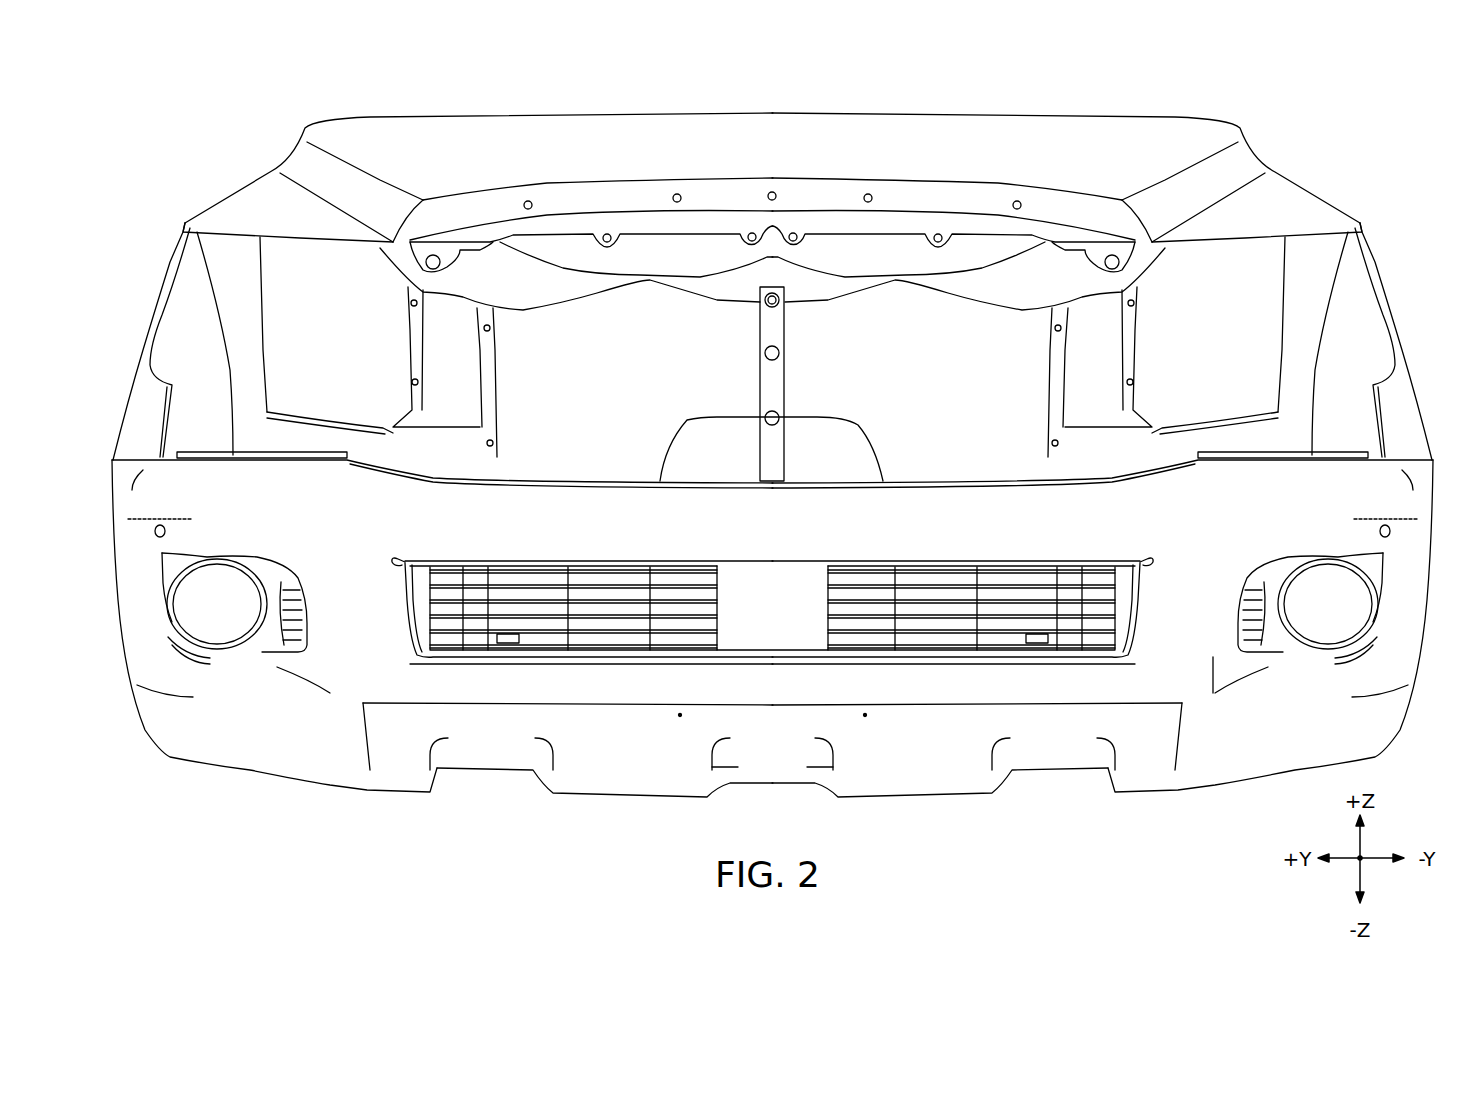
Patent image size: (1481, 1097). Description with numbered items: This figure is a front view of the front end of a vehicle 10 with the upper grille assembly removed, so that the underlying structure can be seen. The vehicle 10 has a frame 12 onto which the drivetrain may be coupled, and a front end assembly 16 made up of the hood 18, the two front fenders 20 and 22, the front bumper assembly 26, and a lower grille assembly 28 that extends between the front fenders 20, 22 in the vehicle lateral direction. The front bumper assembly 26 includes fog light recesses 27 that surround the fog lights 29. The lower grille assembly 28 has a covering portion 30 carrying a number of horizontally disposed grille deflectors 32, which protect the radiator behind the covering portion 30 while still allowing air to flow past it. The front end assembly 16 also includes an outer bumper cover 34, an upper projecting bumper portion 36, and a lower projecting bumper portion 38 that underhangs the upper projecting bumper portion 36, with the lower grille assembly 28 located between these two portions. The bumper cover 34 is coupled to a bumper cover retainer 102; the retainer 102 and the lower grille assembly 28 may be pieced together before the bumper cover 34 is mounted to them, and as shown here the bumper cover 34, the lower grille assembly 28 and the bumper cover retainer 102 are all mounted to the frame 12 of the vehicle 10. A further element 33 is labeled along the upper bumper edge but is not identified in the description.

The vehicle 10 is at (787, 427).
The frame 12 is at (787, 269).
The front end assembly 16 is at (1367, 193).
The hood 18 is at (1202, 133).
The front fender 20 is at (1405, 372).
The front fender 22 is at (138, 372).
The front bumper assembly 26 is at (772, 604).
The fog light recess 27 is at (1338, 612).
The lower grille assembly 28 is at (589, 617).
The fog light 29 is at (1322, 570).
The covering portion 30 is at (872, 617).
The grille deflector 32 is at (672, 583).
The clip bar 33 is at (300, 460).
The bumper cover 34 is at (508, 495).
The upper projecting bumper portion 36 is at (1032, 493).
The lower projecting bumper portion 38 is at (948, 698).
The bumper cover retainer 102 is at (597, 468).